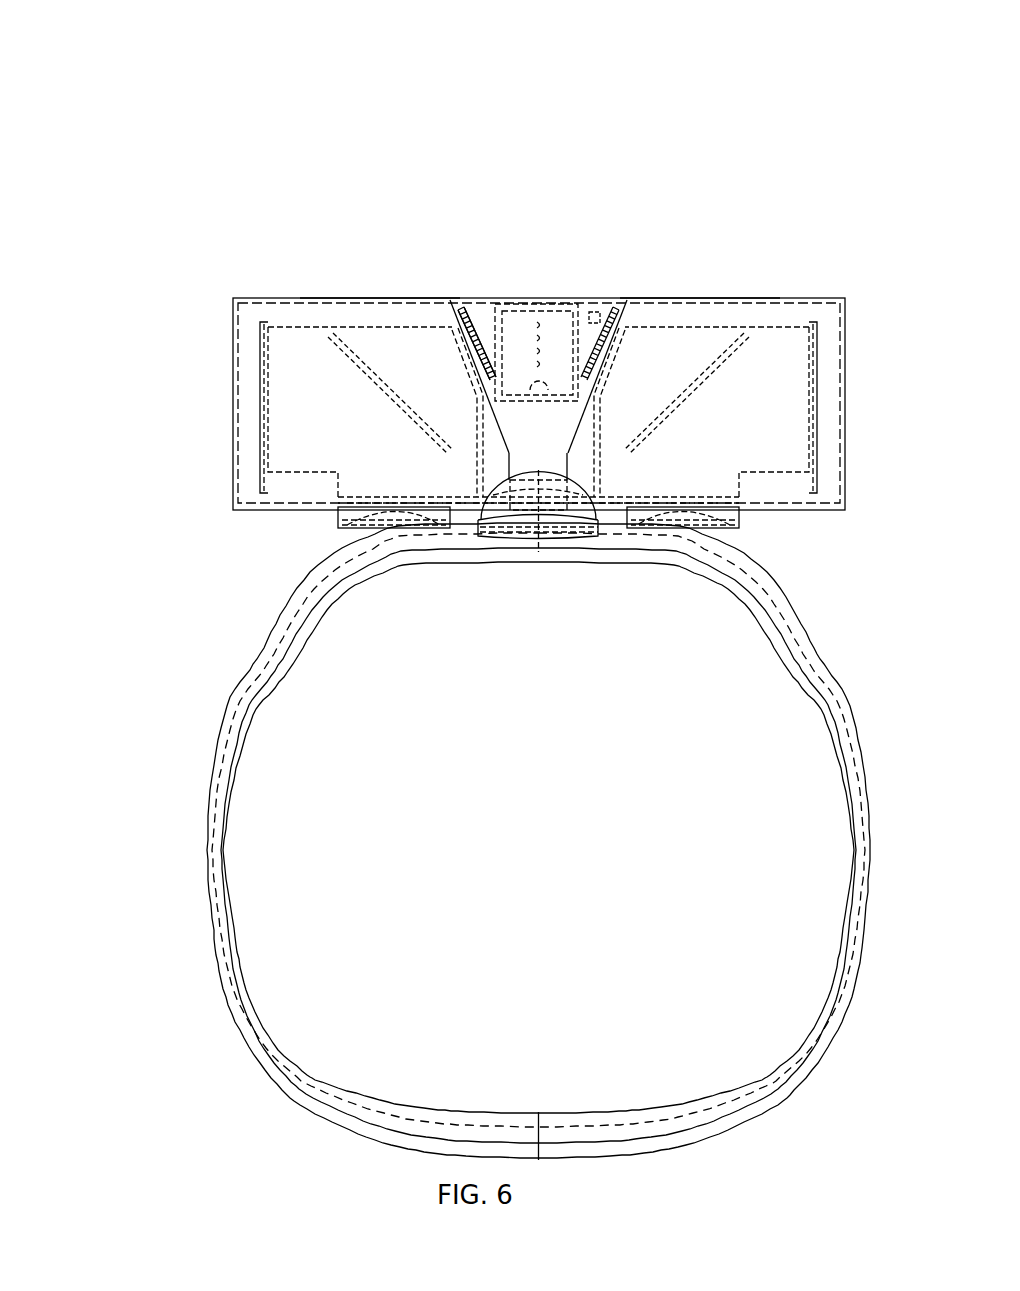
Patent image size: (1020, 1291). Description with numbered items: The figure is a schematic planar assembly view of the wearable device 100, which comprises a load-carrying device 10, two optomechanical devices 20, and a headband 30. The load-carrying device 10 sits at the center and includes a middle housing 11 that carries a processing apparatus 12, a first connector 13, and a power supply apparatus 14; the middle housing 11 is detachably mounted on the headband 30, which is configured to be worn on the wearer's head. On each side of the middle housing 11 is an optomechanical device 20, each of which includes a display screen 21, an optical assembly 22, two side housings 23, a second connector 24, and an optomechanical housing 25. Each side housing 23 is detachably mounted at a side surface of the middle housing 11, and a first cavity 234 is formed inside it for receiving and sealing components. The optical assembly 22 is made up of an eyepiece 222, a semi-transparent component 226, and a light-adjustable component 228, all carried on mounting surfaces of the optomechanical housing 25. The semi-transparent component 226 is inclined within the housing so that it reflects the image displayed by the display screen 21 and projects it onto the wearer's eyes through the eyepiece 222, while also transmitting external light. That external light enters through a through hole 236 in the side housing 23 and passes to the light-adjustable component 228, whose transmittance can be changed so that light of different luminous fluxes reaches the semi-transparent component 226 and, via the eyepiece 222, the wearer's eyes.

The wearable device 100 is at (540, 52).
The load-carrying device 10 is at (622, 222).
The middle housing 11 is at (465, 313).
The processing apparatus 12 is at (598, 312).
The first connector 13 is at (468, 338).
The power supply apparatus 14 is at (555, 327).
The optomechanical device 20 is at (122, 307).
The display screen 21 is at (260, 345).
The optical assembly 22 is at (167, 450).
The side housing 23 is at (232, 300).
The second connector 24 is at (477, 355).
The optomechanical housing 25 is at (320, 405).
The semi-transparent component 226 is at (410, 420).
The light-adjustable component 228 is at (677, 328).
The eyepiece 222 is at (347, 524).
The first cavity 234 is at (256, 316).
The through hole 236 is at (384, 298).
The headband 30 is at (822, 667).